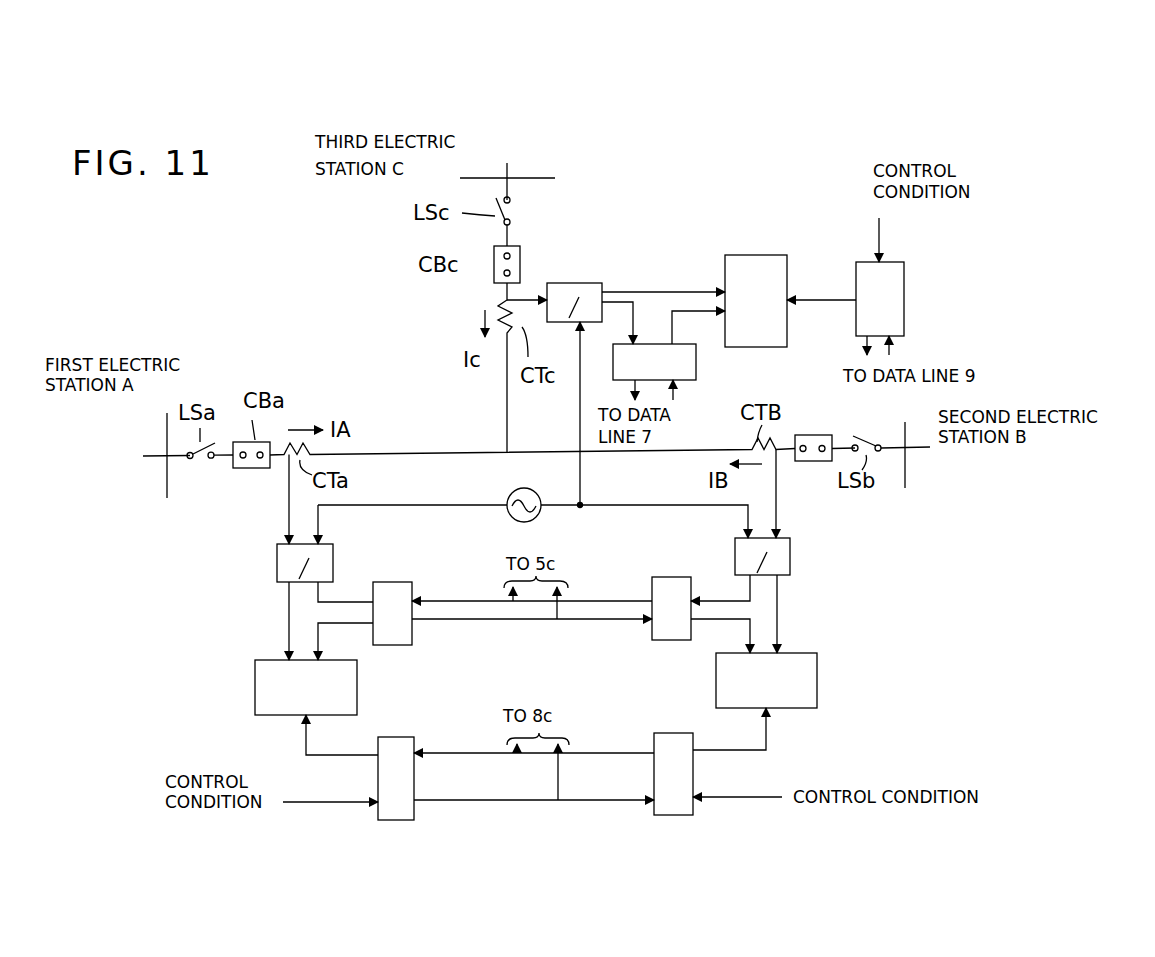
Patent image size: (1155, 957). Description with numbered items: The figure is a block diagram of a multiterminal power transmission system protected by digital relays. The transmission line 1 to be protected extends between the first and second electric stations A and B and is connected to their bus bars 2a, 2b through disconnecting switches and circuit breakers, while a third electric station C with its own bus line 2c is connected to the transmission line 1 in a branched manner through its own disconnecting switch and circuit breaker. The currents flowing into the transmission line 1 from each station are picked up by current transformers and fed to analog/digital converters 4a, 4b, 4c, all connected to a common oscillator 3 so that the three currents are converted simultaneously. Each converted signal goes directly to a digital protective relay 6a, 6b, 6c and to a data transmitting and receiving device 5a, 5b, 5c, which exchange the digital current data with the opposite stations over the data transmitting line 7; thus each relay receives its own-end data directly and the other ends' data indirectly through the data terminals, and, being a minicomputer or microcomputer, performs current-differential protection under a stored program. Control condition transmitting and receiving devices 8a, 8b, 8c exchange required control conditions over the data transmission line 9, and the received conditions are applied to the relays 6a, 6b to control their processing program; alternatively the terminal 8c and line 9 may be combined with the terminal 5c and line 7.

The transmission line 1 is at (427, 450).
The bus bar 2a is at (163, 493).
The bus bar 2b is at (905, 478).
The bus line 2c is at (532, 177).
The common oscillator 3 is at (512, 495).
The analogue/digital converter 4a is at (277, 562).
The analogue/digital converter 4b is at (790, 560).
The analog/digital converter 4c is at (582, 283).
The data transmitting and receiving device 5a is at (390, 582).
The data transmitting and receiving device 5b is at (664, 577).
The data transmitting and receiving terminal 5c is at (654, 372).
The digital protective relay 6a is at (255, 687).
The digital protective relay 6b is at (817, 687).
The digital protective relay 6c is at (750, 255).
The data transmitting line 7 is at (475, 598).
The control condition transmitting and receiving device 8a is at (392, 737).
The control condition transmitting and receiving device 8b is at (670, 733).
The control condition transmitting and receiving terminal 8c is at (904, 305).
The data transmission line 9 is at (477, 748).